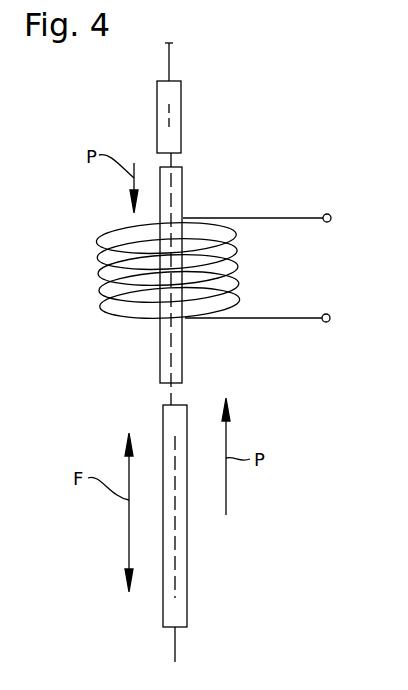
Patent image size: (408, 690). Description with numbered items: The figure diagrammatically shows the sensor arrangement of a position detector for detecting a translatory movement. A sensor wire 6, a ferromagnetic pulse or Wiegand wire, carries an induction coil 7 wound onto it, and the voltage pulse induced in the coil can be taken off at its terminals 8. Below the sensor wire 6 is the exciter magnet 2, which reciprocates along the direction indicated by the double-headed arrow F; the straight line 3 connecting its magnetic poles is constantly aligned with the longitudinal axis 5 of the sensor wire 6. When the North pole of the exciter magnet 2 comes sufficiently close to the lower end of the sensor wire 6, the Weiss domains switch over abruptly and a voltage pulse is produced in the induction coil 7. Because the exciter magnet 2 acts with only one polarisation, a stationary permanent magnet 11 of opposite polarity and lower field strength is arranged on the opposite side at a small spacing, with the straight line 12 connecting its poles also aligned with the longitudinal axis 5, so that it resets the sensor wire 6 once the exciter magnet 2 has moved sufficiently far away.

The exciter magnet 2 is at (187, 535).
The straight line connecting the magnetic poles of the exciter magnet 3 is at (176, 645).
The longitudinal axis of the sensor wire 5 is at (171, 178).
The sensor wire 6 is at (182, 202).
The induction coil 7 is at (98, 265).
The terminals 8 is at (330, 215).
The permanent magnet 11 is at (157, 113).
The straight line connecting the magnetic poles of the permanent magnet 12 is at (170, 45).